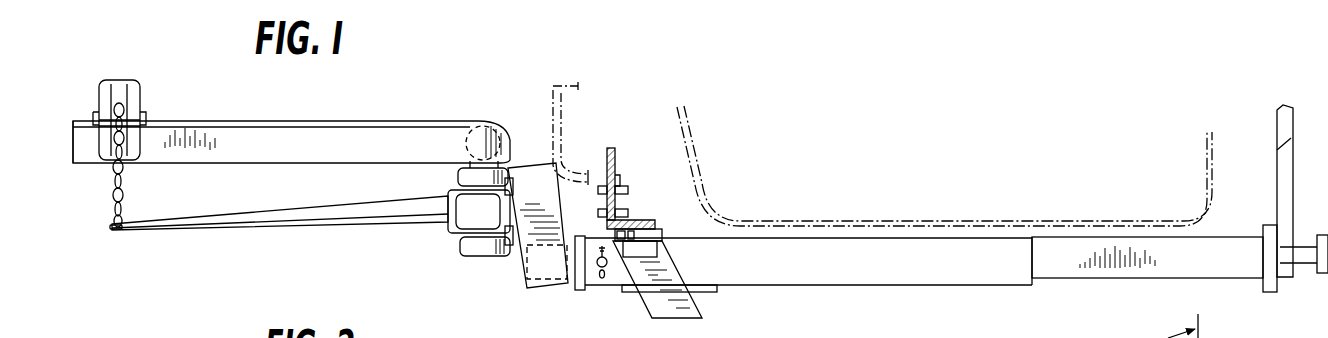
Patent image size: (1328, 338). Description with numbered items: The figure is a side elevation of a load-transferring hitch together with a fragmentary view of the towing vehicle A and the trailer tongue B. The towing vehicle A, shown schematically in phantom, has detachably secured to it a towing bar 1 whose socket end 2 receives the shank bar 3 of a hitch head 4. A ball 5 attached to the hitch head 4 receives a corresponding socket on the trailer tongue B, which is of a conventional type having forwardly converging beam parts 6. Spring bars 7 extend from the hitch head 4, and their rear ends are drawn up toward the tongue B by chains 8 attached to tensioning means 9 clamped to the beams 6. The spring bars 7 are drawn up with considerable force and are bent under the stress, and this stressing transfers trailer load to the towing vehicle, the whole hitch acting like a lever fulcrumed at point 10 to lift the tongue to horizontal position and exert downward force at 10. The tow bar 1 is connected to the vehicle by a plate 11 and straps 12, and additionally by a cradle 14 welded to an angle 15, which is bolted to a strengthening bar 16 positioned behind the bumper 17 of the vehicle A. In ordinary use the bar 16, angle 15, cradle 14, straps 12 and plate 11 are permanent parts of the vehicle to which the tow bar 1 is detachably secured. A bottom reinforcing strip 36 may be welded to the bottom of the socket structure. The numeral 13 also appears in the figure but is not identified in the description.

The towing bar 1 is at (1058, 285).
The socket end 2 is at (618, 270).
The shank bar 3 is at (571, 265).
The hitch head 4 is at (490, 263).
The ball 5 is at (500, 137).
The beam parts 6 is at (218, 132).
The spring bars 7 is at (340, 226).
The chains 8 is at (125, 183).
The tensioning means 9 is at (143, 97).
The fulcrum point 10 is at (1286, 283).
The plate 11 is at (1262, 225).
The straps 12 is at (1292, 203).
The swivel plate 13 is at (528, 180).
The cradle 14 is at (660, 237).
The angle 15 is at (645, 218).
The strengthening bar 16 is at (617, 152).
The bumper 17 is at (558, 88).
The bottom reenforcing strip 36 is at (712, 292).
The towing vehicle A is at (985, 214).
The trailer tongue B is at (291, 116).